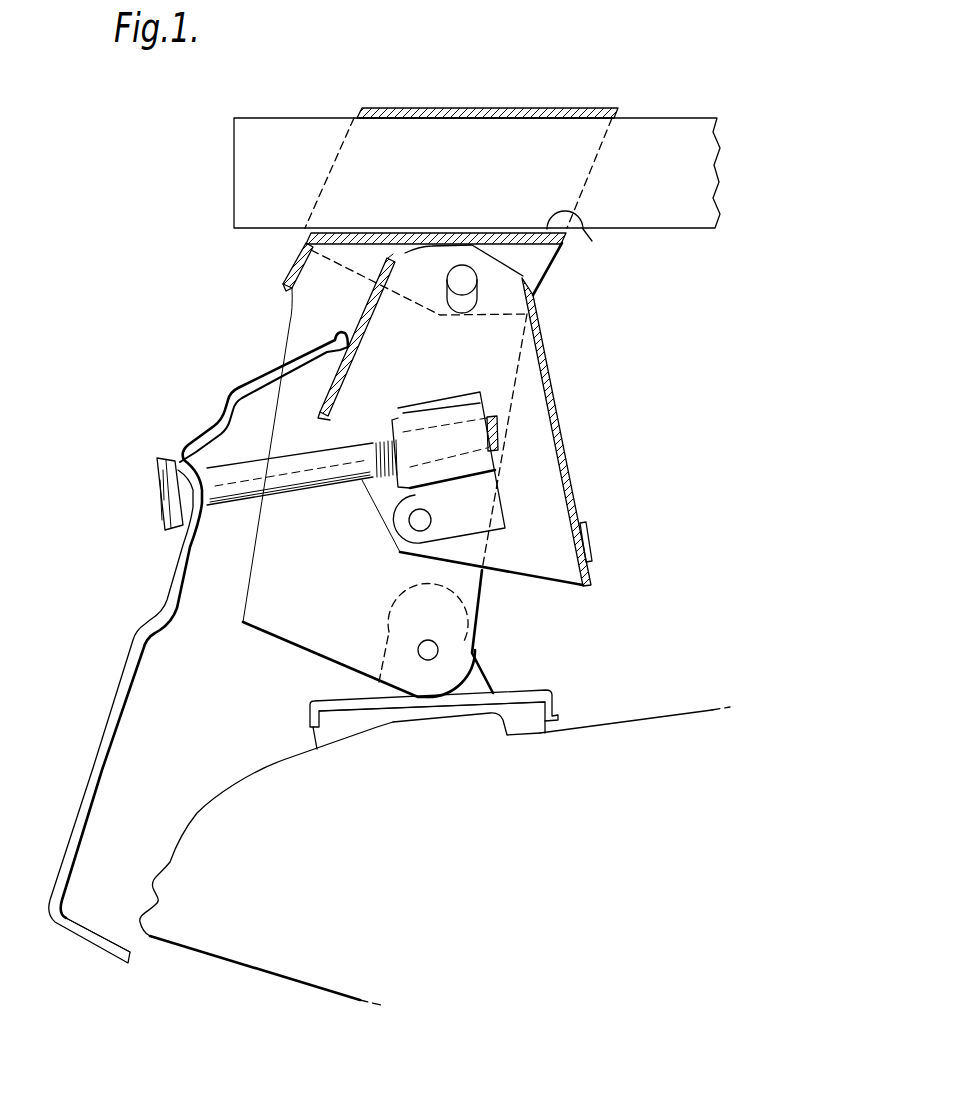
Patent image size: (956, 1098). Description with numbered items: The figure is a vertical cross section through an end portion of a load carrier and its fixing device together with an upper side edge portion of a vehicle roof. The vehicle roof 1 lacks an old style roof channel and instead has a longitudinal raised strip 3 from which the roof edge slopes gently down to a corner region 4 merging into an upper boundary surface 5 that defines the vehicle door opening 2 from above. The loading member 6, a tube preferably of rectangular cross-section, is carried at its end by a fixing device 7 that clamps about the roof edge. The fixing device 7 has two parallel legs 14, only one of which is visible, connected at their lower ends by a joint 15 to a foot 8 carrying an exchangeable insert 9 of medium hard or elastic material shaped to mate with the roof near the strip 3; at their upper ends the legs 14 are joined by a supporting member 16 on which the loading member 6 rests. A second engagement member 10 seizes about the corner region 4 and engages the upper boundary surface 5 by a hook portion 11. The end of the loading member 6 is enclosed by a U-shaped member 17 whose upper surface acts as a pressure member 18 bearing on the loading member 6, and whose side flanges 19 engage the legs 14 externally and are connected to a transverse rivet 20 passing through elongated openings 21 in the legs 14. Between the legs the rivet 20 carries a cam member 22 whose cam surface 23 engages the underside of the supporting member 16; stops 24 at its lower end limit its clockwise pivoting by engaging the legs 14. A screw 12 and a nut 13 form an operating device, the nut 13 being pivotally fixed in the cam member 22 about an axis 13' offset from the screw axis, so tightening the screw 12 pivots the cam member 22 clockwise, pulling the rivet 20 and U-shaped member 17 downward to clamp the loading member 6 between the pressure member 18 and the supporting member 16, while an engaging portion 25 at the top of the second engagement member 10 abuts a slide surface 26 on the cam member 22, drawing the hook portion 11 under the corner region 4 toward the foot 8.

The vehicle roof 1 is at (678, 716).
The vehicle door opening 2 is at (102, 1040).
The longitudinal raised strip 3 is at (505, 730).
The corner region 4 is at (155, 885).
The upper boundary surface 5 is at (205, 953).
The loading member 6 is at (240, 136).
The fixing device 7 is at (100, 337).
The foot 8 is at (497, 700).
The exchangeable insert 9 is at (538, 720).
The second engagement member 10 is at (130, 702).
The hook portion 11 is at (110, 945).
The screw 12 is at (165, 468).
The nut 13 is at (448, 448).
The axis 13' is at (522, 478).
The legs 14 is at (272, 622).
The joint 15 is at (437, 648).
The supporting member 16 is at (585, 233).
The U-shaped member 17 is at (388, 135).
The pressure member 18 is at (493, 94).
The side flanges 19 is at (507, 298).
The rivet 20 is at (470, 270).
The elongated openings 21 is at (448, 291).
The cam member 22 is at (538, 427).
The cam surface 23 is at (407, 250).
The stops 24 is at (588, 525).
The engaging portion 25 is at (333, 331).
The slide surface 26 is at (327, 380).